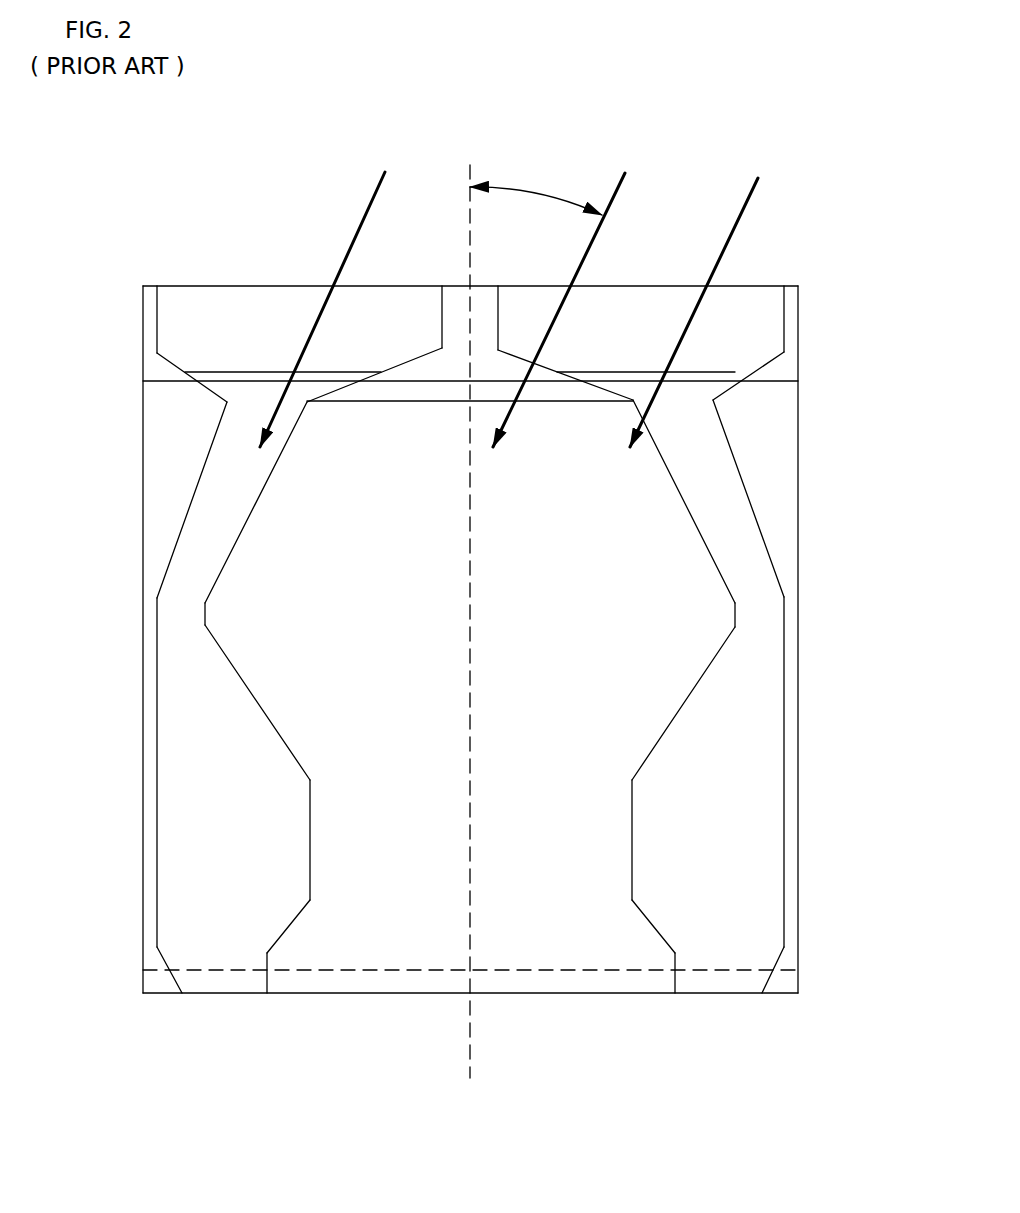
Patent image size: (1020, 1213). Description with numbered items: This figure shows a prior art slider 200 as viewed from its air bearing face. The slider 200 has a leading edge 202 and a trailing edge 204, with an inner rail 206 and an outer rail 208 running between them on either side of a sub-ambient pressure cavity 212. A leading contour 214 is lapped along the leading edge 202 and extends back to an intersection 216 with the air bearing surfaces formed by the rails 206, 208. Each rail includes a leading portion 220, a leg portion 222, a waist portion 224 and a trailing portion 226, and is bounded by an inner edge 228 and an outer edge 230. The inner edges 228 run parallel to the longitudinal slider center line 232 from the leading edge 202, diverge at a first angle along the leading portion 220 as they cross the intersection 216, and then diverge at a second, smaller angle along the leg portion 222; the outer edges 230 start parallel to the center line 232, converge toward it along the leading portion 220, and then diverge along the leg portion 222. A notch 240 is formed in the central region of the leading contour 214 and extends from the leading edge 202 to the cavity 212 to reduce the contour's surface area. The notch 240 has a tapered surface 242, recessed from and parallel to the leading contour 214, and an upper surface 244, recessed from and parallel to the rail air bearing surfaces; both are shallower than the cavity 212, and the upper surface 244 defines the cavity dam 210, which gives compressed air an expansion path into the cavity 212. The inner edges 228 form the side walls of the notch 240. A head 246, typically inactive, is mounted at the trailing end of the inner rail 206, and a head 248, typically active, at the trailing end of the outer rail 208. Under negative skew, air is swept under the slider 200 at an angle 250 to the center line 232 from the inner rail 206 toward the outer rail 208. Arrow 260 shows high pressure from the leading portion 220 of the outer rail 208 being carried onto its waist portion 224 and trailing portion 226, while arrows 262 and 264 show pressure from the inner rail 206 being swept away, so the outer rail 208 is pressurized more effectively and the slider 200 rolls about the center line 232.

The slider 200 is at (148, 225).
The leading edge 202 is at (262, 285).
The trailing edge 204 is at (378, 993).
The inner rail 206 is at (743, 810).
The outer rail 208 is at (197, 817).
The cavity dam 210 is at (355, 400).
The sub-ambient pressure cavity 212 is at (502, 580).
The leading contour 214 is at (185, 318).
The intersection 216 is at (215, 372).
The leading portion 220 is at (252, 390).
The leg portion 222 is at (215, 510).
The waist portion 224 is at (187, 619).
The trailing portion 226 is at (177, 895).
The inner edges 228 is at (270, 720).
The outer edges 230 is at (157, 737).
The longitudinal slider center line 232 is at (468, 226).
The notch 240 is at (487, 313).
The tapered surface 242 is at (455, 313).
The upper surface 244 is at (450, 388).
The head 246 is at (715, 982).
The head 248 is at (222, 982).
The angle 250 is at (520, 188).
The arrow 260 is at (312, 337).
The arrow 262 is at (553, 327).
The arrow 264 is at (735, 235).